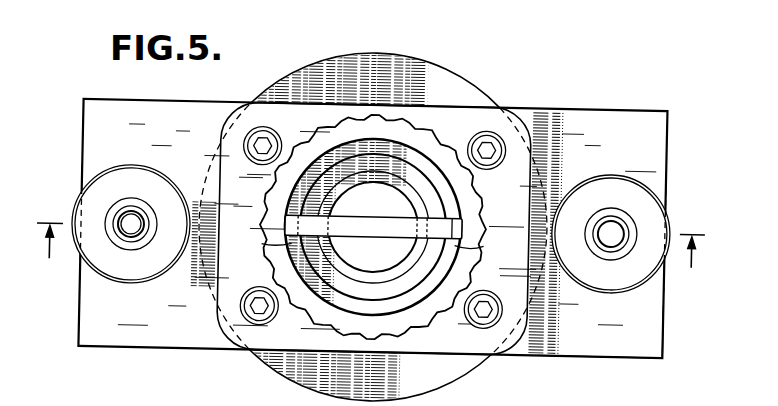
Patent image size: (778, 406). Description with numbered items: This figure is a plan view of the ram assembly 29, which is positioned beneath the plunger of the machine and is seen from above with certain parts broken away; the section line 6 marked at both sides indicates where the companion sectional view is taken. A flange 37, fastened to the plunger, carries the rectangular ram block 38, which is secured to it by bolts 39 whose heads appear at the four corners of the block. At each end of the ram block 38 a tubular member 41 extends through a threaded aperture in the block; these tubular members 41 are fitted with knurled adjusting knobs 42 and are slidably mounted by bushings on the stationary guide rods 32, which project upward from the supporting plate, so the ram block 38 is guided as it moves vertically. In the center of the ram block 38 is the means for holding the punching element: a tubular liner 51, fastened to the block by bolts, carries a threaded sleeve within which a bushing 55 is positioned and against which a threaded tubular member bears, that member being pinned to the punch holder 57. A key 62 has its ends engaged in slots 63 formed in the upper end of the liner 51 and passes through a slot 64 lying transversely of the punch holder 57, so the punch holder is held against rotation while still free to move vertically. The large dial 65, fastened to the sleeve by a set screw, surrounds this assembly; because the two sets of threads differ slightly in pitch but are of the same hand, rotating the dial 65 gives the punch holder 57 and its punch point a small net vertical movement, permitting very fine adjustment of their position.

The section line 6- 6 is at (370, 246).
The ram assembly 29 is at (78, 317).
The stationary guide rods 32 is at (141, 236).
The flange 37 is at (486, 115).
The ram block 38 is at (571, 352).
The bolts 39 is at (493, 166).
The tubular members 41 is at (130, 207).
The knurled adjusting knobs 42 is at (118, 282).
The tubular liner 51 is at (432, 169).
The bushing 55 is at (406, 262).
The punch holder 57 is at (372, 268).
The key 62 is at (360, 224).
The slots 63 is at (265, 248).
The slot 64 is at (380, 238).
The dial 65 is at (460, 368).